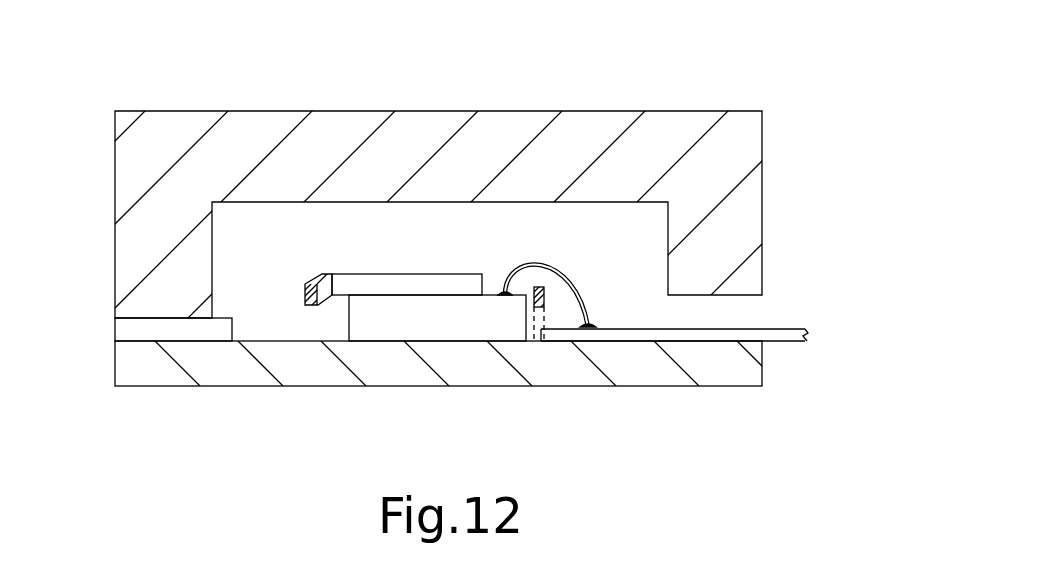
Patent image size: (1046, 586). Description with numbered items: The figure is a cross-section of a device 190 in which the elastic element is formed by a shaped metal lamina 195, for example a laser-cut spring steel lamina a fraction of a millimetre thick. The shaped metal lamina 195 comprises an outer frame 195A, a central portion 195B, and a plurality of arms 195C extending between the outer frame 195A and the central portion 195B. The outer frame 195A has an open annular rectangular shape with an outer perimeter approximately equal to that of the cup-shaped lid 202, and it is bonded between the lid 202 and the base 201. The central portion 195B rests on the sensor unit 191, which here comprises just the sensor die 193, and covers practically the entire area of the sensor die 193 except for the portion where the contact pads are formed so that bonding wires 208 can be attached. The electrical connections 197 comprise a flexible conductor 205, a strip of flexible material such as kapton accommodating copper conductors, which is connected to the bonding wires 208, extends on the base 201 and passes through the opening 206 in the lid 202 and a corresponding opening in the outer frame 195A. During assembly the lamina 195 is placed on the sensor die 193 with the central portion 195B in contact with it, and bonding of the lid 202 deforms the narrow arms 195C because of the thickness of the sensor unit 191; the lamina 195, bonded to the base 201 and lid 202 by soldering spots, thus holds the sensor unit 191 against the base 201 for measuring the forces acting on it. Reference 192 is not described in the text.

The device 190 is at (780, 95).
The sensor unit 191 is at (493, 293).
The package body / housing 192 is at (114, 201).
The sensor die 193 is at (412, 332).
The shaped metal lamina 195 is at (421, 270).
The outer frame 195A is at (123, 333).
The central portion 195B is at (395, 287).
The arms 195C is at (322, 275).
The electrical connections 197 is at (599, 294).
The base 201 is at (640, 370).
The lid 202 is at (670, 136).
The flexible conductor 205 is at (792, 344).
The opening 206 is at (694, 313).
The bonding wires 208 is at (562, 270).